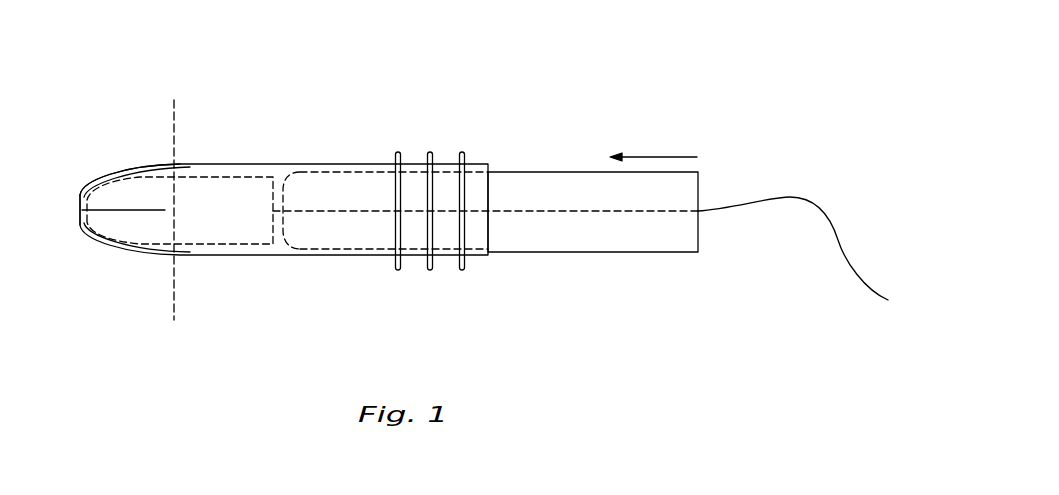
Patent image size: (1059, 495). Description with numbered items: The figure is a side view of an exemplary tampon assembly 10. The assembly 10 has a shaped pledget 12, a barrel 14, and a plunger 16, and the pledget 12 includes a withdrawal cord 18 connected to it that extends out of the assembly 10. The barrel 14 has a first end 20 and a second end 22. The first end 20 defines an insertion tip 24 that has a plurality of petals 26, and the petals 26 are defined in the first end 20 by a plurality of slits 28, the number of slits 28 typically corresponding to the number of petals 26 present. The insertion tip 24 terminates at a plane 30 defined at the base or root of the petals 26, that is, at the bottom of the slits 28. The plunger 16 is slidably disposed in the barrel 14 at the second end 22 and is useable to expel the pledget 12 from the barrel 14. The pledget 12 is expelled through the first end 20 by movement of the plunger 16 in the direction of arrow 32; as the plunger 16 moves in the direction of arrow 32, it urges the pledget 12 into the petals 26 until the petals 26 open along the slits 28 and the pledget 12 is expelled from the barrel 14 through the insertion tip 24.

The tampon assembly 10 is at (405, 100).
The shaped pledget 12 is at (220, 176).
The barrel 14 is at (215, 255).
The plunger 16 is at (615, 252).
The withdrawal cord 18 is at (843, 265).
The first end 20 is at (80, 205).
The second end 22 is at (490, 163).
The insertion tip 24 is at (113, 163).
The petals 26 is at (135, 227).
The slits 28 is at (165, 210).
The plane 30 is at (172, 305).
The arrow 32 is at (672, 157).